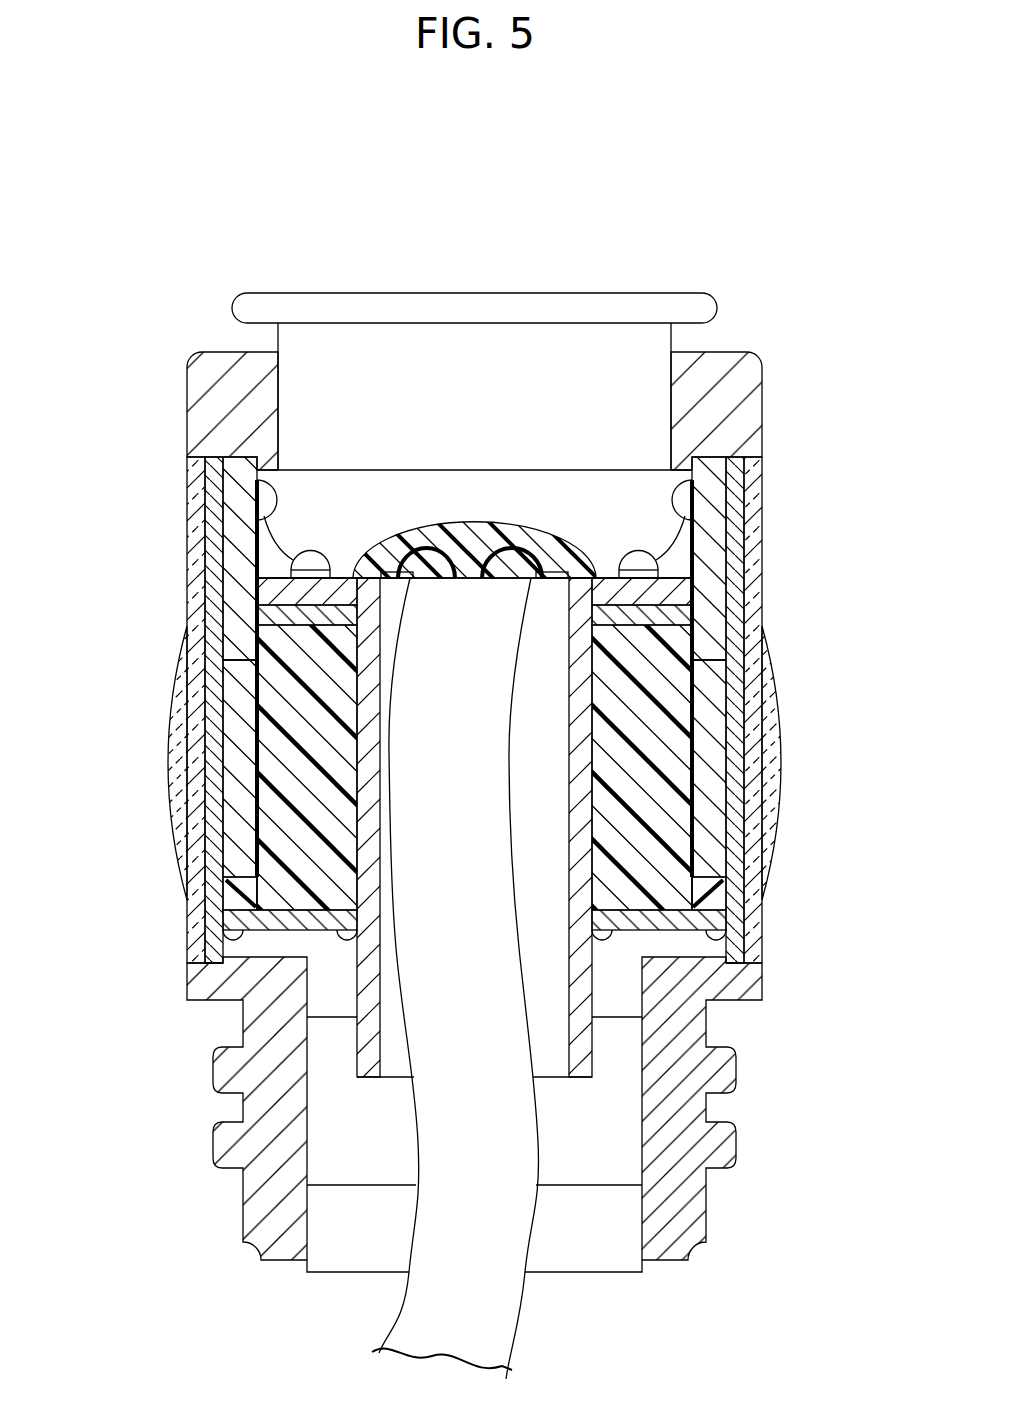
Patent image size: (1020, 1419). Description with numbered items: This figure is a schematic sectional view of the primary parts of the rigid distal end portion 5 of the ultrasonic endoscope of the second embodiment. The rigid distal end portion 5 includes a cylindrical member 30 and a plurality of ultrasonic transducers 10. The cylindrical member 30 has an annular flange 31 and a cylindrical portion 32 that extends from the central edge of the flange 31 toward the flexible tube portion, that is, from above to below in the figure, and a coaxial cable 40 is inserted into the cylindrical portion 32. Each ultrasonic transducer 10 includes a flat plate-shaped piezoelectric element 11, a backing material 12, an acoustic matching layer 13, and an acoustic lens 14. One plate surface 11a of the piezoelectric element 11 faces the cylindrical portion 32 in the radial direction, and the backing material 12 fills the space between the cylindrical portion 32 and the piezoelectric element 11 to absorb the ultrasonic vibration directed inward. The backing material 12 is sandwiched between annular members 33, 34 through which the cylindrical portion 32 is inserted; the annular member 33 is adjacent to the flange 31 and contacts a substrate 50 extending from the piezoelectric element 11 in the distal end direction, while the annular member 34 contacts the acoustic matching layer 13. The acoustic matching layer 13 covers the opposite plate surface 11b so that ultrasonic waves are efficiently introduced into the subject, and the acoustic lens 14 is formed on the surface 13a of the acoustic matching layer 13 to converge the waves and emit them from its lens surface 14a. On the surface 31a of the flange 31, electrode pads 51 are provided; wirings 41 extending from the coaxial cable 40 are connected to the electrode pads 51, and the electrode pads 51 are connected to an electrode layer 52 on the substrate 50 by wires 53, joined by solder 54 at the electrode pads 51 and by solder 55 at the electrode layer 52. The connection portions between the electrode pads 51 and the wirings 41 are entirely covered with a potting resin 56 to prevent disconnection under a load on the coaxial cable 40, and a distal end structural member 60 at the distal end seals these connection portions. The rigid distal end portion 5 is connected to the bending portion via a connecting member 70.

The rigid distal end portion 5 is at (428, 180).
The ultrasonic transducer 10 is at (475, 710).
The piezoelectric element 11 is at (486, 762).
The plate surface 11a is at (587, 668).
The plate surface 11b is at (680, 702).
The backing material 12 is at (228, 895).
The acoustic matching layer 13 is at (486, 710).
The surface 13a is at (745, 927).
The acoustic lens 14 is at (475, 710).
The lens surface 14a is at (172, 665).
The cylindrical member 30 is at (506, 794).
The flange 31 is at (680, 592).
The surface 31a is at (290, 565).
The cylindrical portion 32 is at (687, 617).
The annular member 33 is at (262, 611).
The annular member 34 is at (235, 917).
The coaxial cable 40 is at (505, 1333).
The wirings 41 is at (453, 543).
The substrate 50 is at (240, 583).
The electrode pads 51 is at (397, 575).
The electrode layer 52 is at (257, 497).
The wires 53 is at (262, 553).
The solder 54 is at (315, 557).
The solder 55 is at (268, 492).
The potting resin 56 is at (490, 527).
The distal end structural member 60 is at (750, 408).
The connecting member 70 is at (695, 1073).